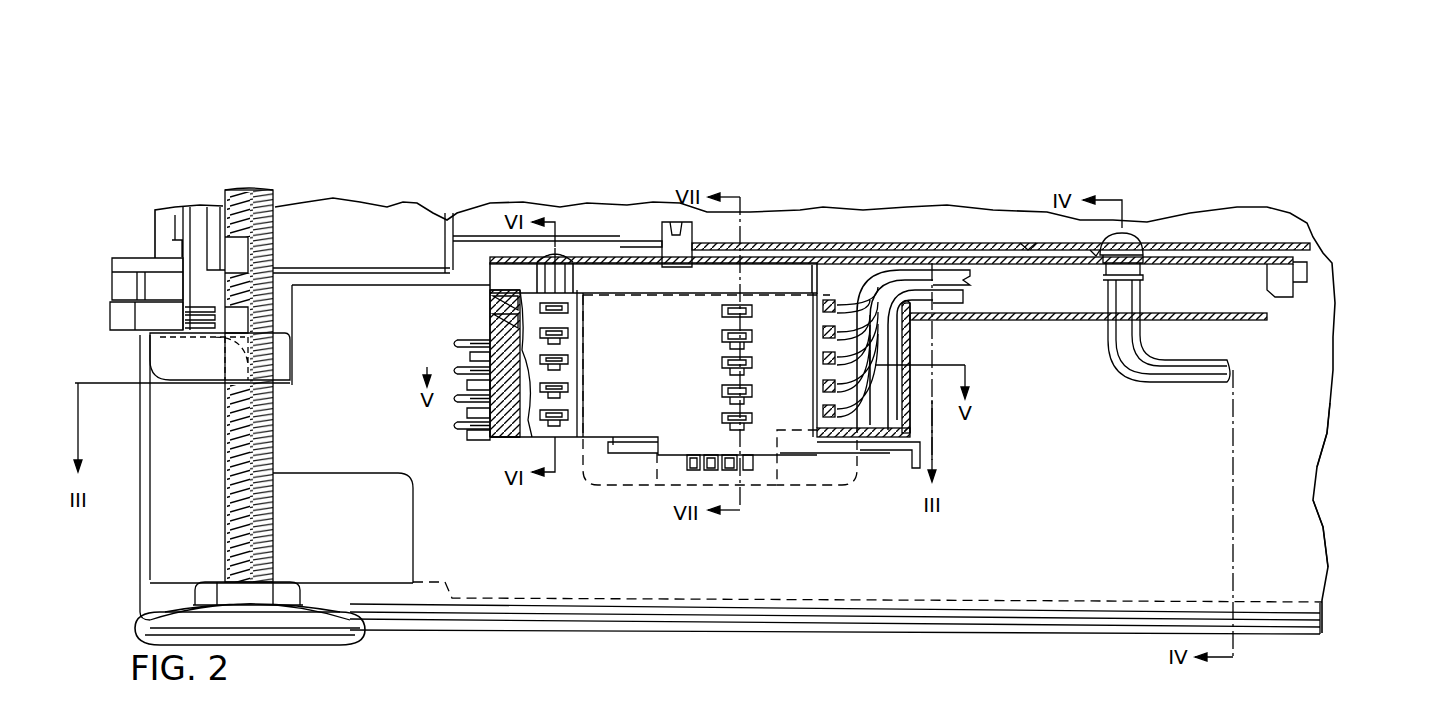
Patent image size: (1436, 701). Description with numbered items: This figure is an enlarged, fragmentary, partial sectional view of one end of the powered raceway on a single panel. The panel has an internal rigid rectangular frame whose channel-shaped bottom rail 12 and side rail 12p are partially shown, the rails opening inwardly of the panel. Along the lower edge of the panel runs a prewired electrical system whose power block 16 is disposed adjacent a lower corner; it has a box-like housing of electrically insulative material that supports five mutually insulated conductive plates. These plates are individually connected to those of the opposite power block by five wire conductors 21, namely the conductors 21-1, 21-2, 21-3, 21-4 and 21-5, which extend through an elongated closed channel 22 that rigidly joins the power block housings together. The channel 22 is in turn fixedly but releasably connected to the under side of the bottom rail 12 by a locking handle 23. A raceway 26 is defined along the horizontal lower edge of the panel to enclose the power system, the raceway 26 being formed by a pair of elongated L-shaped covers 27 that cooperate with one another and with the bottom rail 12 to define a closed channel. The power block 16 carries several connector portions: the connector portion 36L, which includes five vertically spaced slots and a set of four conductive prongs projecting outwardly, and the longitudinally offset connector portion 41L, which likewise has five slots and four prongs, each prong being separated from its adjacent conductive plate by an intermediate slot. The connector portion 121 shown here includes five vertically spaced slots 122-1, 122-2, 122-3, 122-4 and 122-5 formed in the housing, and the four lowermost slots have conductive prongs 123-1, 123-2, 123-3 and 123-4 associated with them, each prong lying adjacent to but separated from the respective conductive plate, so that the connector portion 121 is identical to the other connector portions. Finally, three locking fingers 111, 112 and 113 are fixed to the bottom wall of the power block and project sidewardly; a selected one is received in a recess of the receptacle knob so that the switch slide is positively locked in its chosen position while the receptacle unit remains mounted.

The bottom rail 12 is at (1300, 250).
The side rail 12p is at (433, 225).
The power block 16 is at (794, 455).
The wire conductors 21 is at (905, 270).
The wire conductor 21-1 is at (863, 412).
The wire conductor 21-2 is at (860, 383).
The wire conductor 21-3 is at (866, 364).
The wire conductor 21-4 is at (853, 338).
The wire conductor 21-5 is at (857, 310).
The closed channel 22 is at (1223, 303).
The locking handle 23 is at (1196, 372).
The raceway 26 is at (1323, 531).
The L-shaped cover 27 is at (1303, 437).
The connector portion 36L is at (572, 352).
The connector portion 41L is at (719, 358).
The locking finger 111 is at (732, 472).
The locking finger 112 is at (711, 470).
The locking finger 113 is at (690, 470).
The connector portion 121 is at (442, 344).
The slot 122-1 is at (488, 420).
The slot 122-2 is at (460, 374).
The slot 122-3 is at (465, 352).
The slot 122-4 is at (496, 330).
The slot 122-5 is at (496, 310).
The conductive prong 123-1 is at (468, 437).
The conductive prong 123-2 is at (468, 410).
The conductive prong 123-3 is at (470, 380).
The conductive prong 123-4 is at (472, 352).